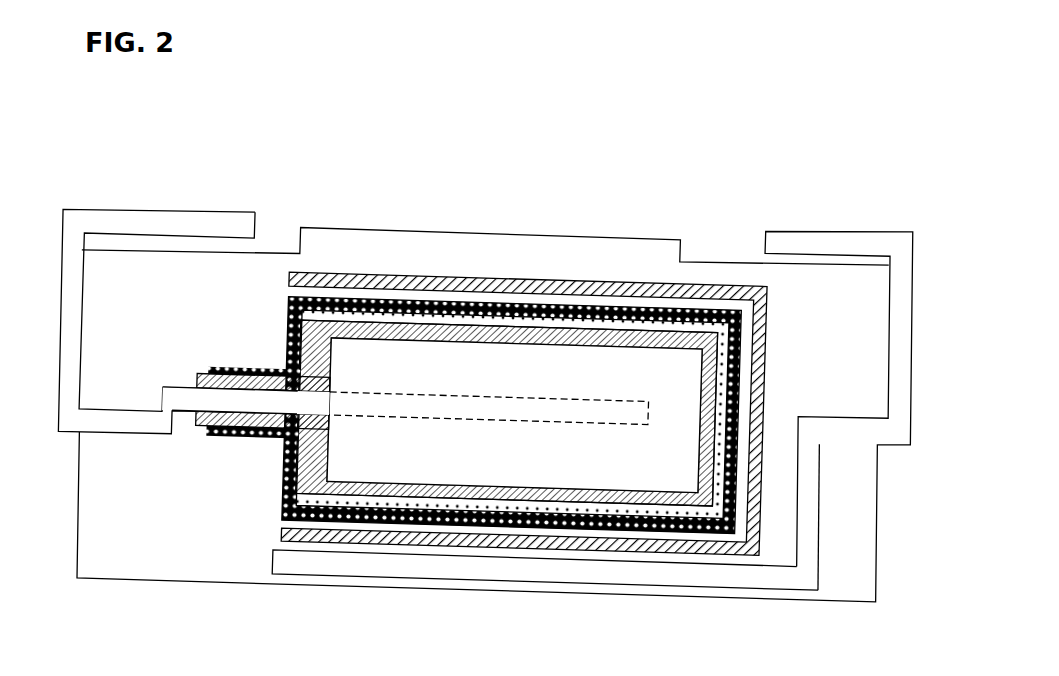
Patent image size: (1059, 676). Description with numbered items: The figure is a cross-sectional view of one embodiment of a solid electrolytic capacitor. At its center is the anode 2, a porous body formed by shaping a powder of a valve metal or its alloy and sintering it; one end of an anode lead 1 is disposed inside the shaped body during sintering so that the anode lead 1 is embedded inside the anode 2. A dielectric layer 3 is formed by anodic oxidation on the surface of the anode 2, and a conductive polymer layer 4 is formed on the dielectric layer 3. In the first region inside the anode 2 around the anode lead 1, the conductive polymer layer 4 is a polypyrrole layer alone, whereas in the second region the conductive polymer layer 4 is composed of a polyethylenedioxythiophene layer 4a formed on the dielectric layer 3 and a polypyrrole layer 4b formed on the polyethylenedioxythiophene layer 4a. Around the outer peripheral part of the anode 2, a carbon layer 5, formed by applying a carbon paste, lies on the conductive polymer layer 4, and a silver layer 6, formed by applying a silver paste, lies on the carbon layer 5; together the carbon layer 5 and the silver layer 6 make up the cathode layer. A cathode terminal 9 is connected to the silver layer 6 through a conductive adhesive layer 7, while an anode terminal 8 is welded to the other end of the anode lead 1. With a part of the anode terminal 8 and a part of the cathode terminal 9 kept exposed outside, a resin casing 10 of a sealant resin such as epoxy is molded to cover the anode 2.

The anode lead 1 is at (227, 395).
The anode 2 is at (356, 360).
The dielectric layer 3 is at (425, 311).
The conductive polymer layer 4 is at (515, 314).
The polyethylenedioxythiophene layer 4a is at (499, 290).
The polypyrrole layer 4b is at (539, 288).
The carbon layer 5 is at (594, 276).
The silver layer 6 is at (673, 265).
The conductive adhesive layer 7 is at (396, 542).
The anode terminal 8 is at (192, 218).
The cathode terminal 9 is at (790, 218).
The resin casing 10 is at (191, 537).